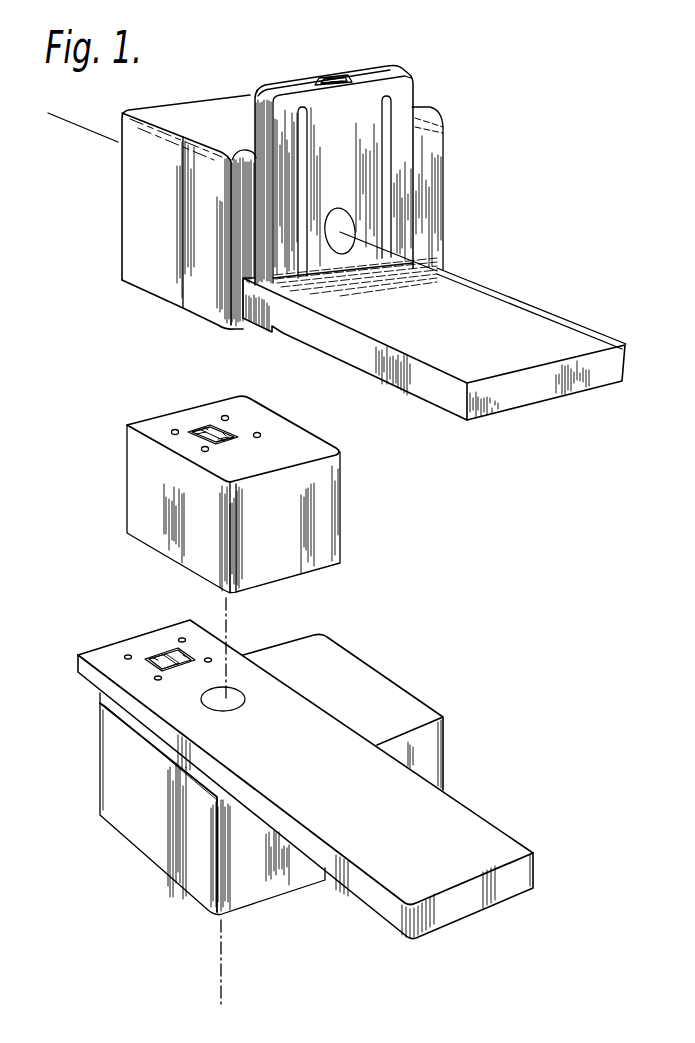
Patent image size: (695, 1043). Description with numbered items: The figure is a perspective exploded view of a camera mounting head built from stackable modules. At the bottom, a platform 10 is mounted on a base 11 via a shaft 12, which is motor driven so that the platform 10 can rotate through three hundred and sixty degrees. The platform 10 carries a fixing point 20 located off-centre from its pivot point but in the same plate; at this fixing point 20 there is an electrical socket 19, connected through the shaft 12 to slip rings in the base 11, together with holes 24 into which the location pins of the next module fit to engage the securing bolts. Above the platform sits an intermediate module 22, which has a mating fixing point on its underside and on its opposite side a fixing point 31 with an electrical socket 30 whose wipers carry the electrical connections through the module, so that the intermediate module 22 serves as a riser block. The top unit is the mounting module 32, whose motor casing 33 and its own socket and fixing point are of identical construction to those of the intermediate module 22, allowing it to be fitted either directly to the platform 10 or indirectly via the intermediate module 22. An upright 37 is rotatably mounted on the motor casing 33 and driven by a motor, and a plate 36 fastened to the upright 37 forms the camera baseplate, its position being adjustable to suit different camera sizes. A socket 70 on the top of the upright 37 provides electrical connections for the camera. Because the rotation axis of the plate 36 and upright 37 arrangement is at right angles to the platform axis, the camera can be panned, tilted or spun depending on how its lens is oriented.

The platform 10 is at (285, 757).
The base 11 is at (322, 642).
The shaft 12 is at (235, 705).
The electrical socket 19 is at (157, 655).
The platform fixing point 20 is at (161, 634).
The intermediate module 22 is at (260, 481).
The holes 24 is at (210, 658).
The electrical socket 30 is at (227, 428).
The fixing point 31 is at (199, 420).
The mounting module 32 is at (310, 169).
The motor casing 33 is at (438, 133).
The plate 36 is at (578, 345).
The upright 37 is at (403, 192).
The socket 70 is at (333, 80).